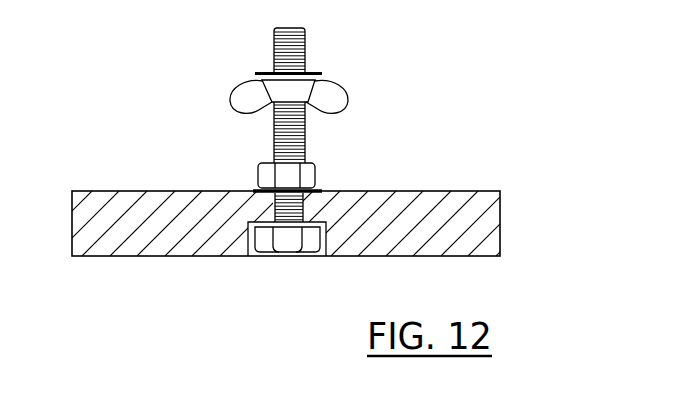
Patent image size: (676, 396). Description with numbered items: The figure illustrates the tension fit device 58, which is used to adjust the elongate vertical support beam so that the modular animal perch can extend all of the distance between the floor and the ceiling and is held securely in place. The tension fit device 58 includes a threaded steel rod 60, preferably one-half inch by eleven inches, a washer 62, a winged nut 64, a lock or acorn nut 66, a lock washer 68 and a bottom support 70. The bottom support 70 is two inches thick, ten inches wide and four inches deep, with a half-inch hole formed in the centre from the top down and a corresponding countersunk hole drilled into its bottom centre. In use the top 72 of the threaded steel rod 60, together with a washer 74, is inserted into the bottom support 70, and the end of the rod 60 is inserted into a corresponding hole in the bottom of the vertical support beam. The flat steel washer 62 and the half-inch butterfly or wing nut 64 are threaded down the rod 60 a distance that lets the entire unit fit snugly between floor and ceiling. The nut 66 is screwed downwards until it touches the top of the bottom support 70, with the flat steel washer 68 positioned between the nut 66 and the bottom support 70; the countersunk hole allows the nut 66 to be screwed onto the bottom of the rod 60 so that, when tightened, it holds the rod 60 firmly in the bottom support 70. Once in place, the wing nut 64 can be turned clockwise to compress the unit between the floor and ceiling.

The tension fit device 58 is at (110, 147).
The threaded steel rod 60 is at (305, 42).
The washer 62 is at (323, 75).
The winged nut 64 is at (340, 102).
The lock or acorn nut 66 is at (308, 163).
The lock washer 68 is at (320, 189).
The bottom support 70 is at (477, 231).
The top of threaded steel rod 72 is at (289, 246).
The washer 74 is at (253, 222).